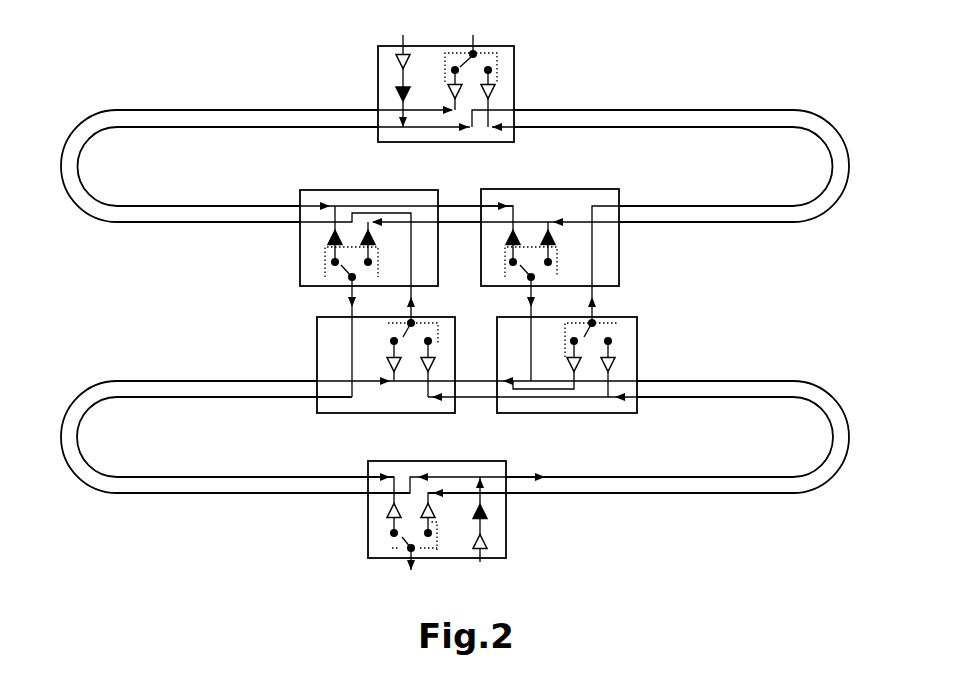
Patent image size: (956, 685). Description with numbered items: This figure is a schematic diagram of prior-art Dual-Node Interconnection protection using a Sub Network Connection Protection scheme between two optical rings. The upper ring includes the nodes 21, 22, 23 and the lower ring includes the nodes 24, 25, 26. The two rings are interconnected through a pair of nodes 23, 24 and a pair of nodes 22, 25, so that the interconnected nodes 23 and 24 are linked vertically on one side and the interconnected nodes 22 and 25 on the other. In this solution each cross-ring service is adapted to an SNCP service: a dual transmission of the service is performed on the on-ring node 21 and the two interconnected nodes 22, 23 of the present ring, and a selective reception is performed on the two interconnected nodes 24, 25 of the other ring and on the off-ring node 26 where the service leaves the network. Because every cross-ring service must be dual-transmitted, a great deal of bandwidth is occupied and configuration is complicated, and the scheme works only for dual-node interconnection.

The node 21 is at (508, 68).
The node 22 is at (603, 252).
The node 23 is at (312, 252).
The node 24 is at (322, 365).
The node 25 is at (620, 362).
The node 26 is at (490, 522).